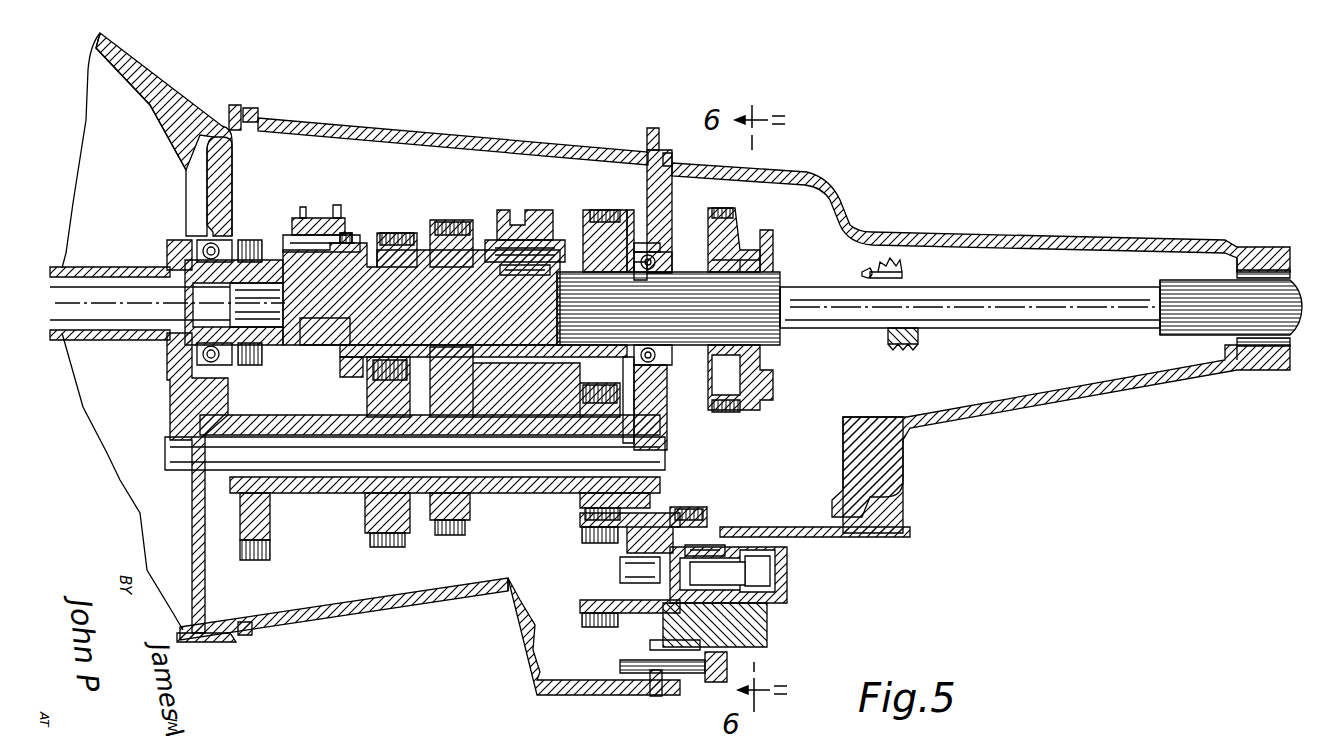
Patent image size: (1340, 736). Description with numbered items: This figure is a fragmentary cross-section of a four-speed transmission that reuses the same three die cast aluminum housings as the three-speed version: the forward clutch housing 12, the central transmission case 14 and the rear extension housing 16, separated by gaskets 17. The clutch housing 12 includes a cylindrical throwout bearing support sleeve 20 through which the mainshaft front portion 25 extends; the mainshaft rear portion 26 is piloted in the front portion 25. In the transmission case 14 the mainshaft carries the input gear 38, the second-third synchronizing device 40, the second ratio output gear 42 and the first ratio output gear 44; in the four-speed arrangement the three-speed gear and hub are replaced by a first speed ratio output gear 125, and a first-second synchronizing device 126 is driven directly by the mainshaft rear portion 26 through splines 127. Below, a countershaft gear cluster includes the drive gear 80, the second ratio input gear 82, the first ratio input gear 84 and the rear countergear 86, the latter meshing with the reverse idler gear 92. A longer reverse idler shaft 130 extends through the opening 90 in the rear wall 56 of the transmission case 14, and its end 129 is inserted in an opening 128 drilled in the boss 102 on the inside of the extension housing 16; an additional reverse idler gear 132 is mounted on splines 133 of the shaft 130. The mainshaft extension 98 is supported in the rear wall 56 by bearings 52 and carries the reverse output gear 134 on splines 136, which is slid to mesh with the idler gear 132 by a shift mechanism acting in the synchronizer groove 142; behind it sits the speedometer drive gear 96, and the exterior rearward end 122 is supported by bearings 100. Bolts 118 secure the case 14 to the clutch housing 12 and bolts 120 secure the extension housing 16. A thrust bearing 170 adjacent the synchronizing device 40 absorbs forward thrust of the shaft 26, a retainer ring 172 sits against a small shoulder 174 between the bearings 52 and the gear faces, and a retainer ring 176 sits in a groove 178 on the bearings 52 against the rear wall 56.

The clutch housing 12 is at (173, 79).
The transmission case 14 is at (395, 137).
The extension housing 16 is at (935, 238).
The gasket 17 is at (237, 110).
The throwout bearing support sleeve 20 is at (158, 267).
The mainshaft front portion 25 is at (190, 345).
The mainshaft rear portion 26 is at (370, 252).
The input gear 38 is at (230, 248).
The second-third synchronizing device 40 is at (312, 228).
The second ratio output gear 42 is at (395, 240).
The first ratio output gear 44 is at (450, 230).
The bearings 52 is at (662, 363).
The rear wall of the transmission case 56 is at (655, 418).
The drive gear 80 is at (268, 540).
The second ratio input gear 82 is at (380, 547).
The first ratio input gear 84 is at (472, 537).
The rear countergear 86 is at (578, 502).
The third opening 90 is at (642, 548).
The reverse idler gear 92 is at (582, 618).
The speedometer drive gear 96 is at (915, 345).
The mainshaft extension 98 is at (856, 320).
The bearings 100 is at (1232, 275).
The boss 102 is at (752, 530).
The washer head bolts 118 is at (258, 112).
The washer head bolts 120 is at (688, 160).
The exterior rearward end of the extension shaft 122 is at (1290, 333).
The first speed ratio output gear 125 is at (592, 222).
The first-second synchronizing device 126 is at (530, 222).
The splines 127 is at (543, 277).
The opening 128 is at (777, 552).
The end of the reverse idler shaft 129 is at (762, 575).
The reverse idler shaft 130 is at (640, 600).
The additional reverse idler gear 132 is at (678, 512).
The splines 133 is at (692, 552).
The reverse output gear 134 is at (745, 412).
The splines 136 is at (775, 320).
The synchronizer groove 142 is at (758, 232).
The thrust bearing 170 is at (294, 345).
The retainer ring 172 is at (628, 248).
The small shoulder 174 is at (640, 300).
The retainer ring 176 is at (652, 240).
The groove 178 is at (660, 250).